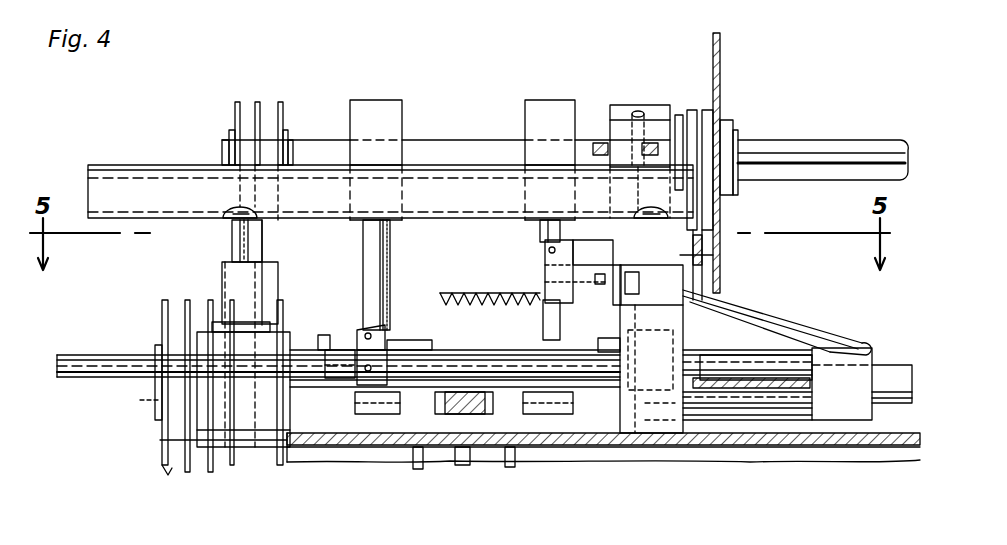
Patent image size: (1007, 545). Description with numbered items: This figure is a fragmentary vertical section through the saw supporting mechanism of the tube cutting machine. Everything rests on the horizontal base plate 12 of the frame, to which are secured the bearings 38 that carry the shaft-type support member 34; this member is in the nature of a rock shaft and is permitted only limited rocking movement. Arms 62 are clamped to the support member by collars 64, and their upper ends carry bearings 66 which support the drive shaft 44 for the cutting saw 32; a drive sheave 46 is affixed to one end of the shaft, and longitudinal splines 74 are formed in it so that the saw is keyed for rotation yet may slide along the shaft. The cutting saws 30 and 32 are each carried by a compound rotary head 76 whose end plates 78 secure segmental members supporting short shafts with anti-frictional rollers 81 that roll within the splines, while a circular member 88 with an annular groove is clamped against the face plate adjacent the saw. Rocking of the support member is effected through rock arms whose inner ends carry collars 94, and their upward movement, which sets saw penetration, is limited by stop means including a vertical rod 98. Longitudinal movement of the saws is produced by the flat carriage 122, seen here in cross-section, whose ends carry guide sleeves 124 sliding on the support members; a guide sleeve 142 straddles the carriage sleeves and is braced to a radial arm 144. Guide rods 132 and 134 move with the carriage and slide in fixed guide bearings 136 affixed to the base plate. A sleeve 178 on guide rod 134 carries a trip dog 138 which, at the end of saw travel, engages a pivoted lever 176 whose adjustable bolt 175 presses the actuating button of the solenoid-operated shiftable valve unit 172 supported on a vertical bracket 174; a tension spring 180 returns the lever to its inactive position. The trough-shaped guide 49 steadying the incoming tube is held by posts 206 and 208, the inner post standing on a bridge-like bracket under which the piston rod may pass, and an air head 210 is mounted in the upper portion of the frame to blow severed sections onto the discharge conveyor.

The base plate 12 is at (627, 450).
The cutting saw 30 is at (720, 55).
The cutting saw 32 is at (158, 320).
The support member 34 is at (882, 365).
The bearing 38 is at (605, 340).
The drive shaft 44 is at (440, 145).
The drive sheave 46 is at (233, 115).
The trough-shaped guide 49 is at (170, 178).
The arm 62 is at (392, 247).
The collar 64 is at (385, 414).
The bearing 66 is at (372, 100).
The longitudinal spline 74 is at (805, 142).
The rotary head 76 is at (640, 100).
The end plate 78 is at (610, 120).
The anti-frictional roller 81 is at (630, 130).
The circular member 88 is at (692, 110).
The collar 94 is at (447, 447).
The vertical rod 98 is at (475, 460).
The carriage 122 is at (785, 390).
The guide sleeve 124 is at (775, 350).
The guide rod 132 is at (125, 378).
The guide rod 134 is at (100, 417).
The guide bearing 136 is at (345, 350).
The trip dog 138 is at (387, 328).
The guide sleeve 142 is at (840, 375).
The radial arm 144 is at (713, 255).
The solenoid-operated shiftable valve unit 172 is at (632, 258).
The vertical bracket 174 is at (670, 422).
The adjustable bolt 175 is at (545, 258).
The pivoted lever 176 is at (543, 320).
The sleeve 178 is at (392, 340).
The tension spring 180 is at (497, 302).
The post 206 is at (229, 333).
The post 208 is at (632, 238).
The air head 210 is at (688, 336).